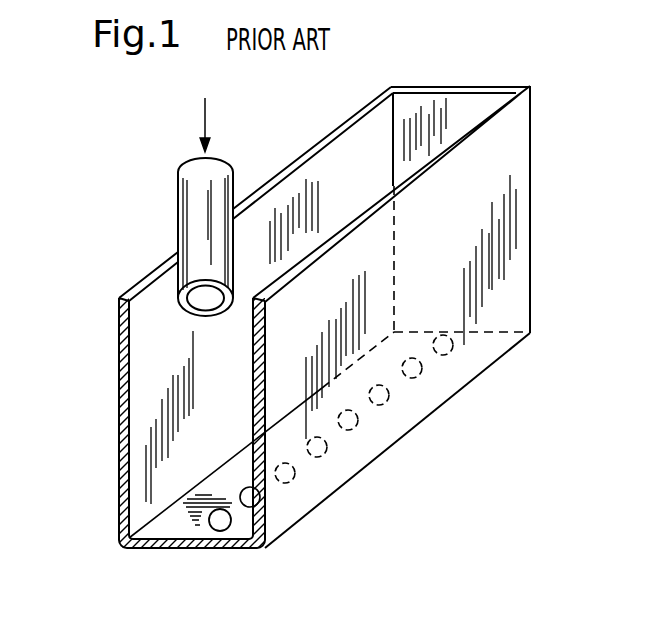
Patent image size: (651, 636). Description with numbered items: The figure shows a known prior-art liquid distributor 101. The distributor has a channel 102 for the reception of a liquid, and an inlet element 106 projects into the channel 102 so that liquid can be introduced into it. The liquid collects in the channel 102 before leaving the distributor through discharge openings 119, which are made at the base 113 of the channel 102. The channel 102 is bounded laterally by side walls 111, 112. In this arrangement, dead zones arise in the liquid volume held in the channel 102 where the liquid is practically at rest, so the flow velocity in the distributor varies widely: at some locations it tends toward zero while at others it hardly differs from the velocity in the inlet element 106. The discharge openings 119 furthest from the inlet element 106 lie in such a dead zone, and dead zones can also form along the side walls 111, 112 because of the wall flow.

The liquid distributor 101 is at (90, 231).
The channel 102 is at (432, 123).
The inlet element 106 is at (190, 180).
The side wall 111 is at (443, 158).
The side wall 112 is at (302, 159).
The base 113 is at (150, 550).
The discharge openings 119 is at (220, 531).